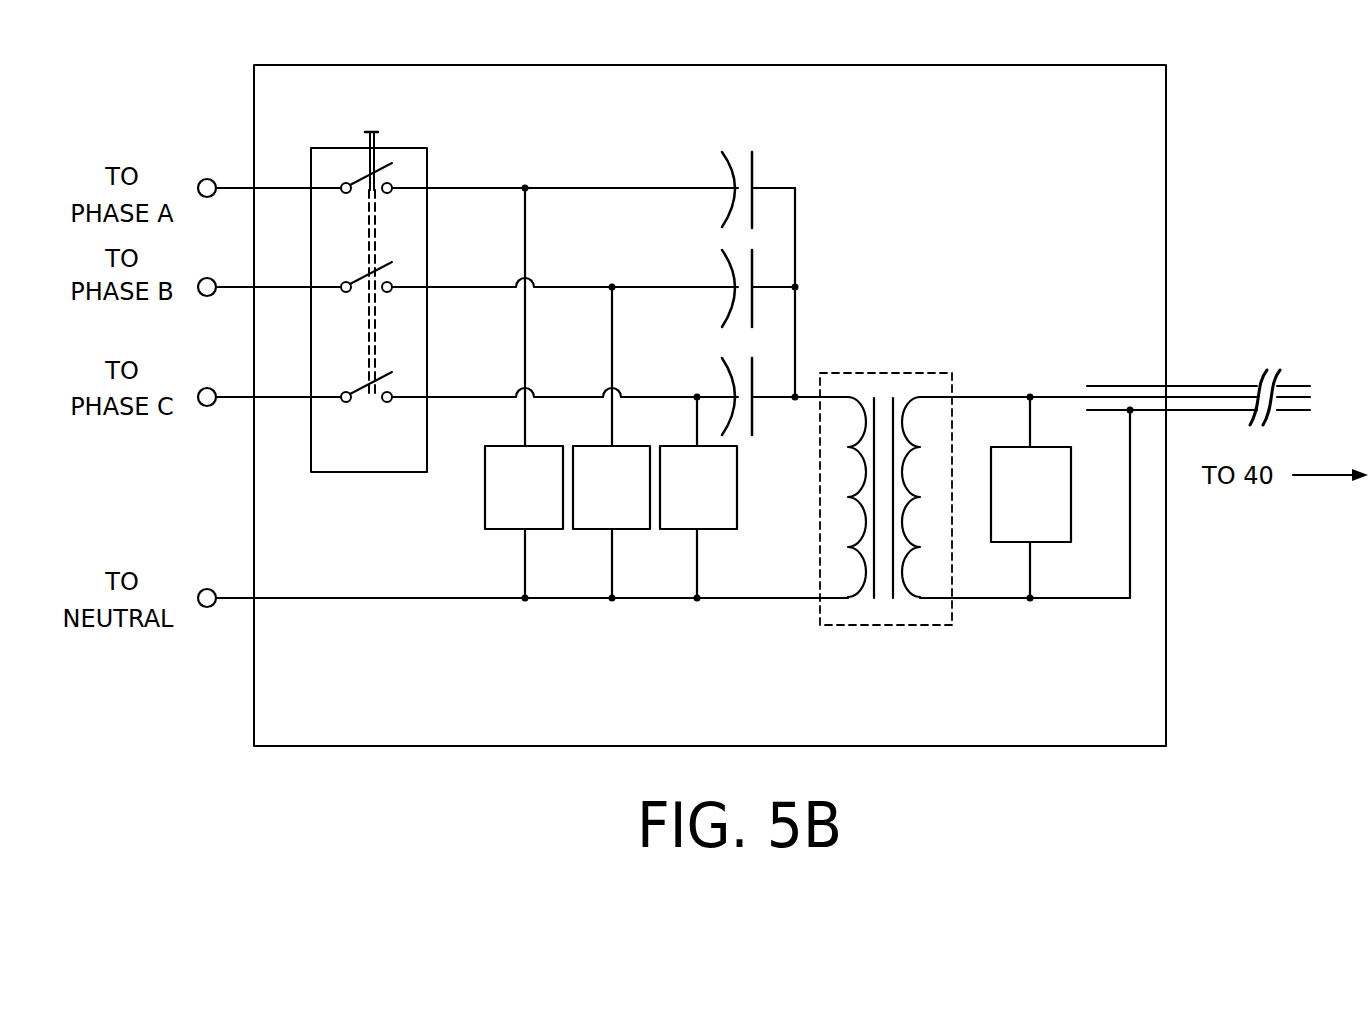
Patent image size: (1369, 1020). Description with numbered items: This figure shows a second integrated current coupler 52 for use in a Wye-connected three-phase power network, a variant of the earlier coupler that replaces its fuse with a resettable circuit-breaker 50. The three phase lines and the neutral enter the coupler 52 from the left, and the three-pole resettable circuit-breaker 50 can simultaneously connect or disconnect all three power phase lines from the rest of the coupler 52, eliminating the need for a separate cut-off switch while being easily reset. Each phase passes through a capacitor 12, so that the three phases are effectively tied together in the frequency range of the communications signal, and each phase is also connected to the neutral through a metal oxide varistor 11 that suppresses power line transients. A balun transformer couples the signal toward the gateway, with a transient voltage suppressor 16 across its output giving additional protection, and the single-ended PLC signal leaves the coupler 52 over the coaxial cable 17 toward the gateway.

The metal oxide varistor 11 is at (611, 393).
The capacitor 12 is at (740, 150).
The transient voltage suppressor 16 is at (1018, 525).
The coaxial cable 17 is at (1222, 387).
The resettable circuit-breaker 50 is at (384, 452).
The second integrated current coupler 52 is at (1104, 725).